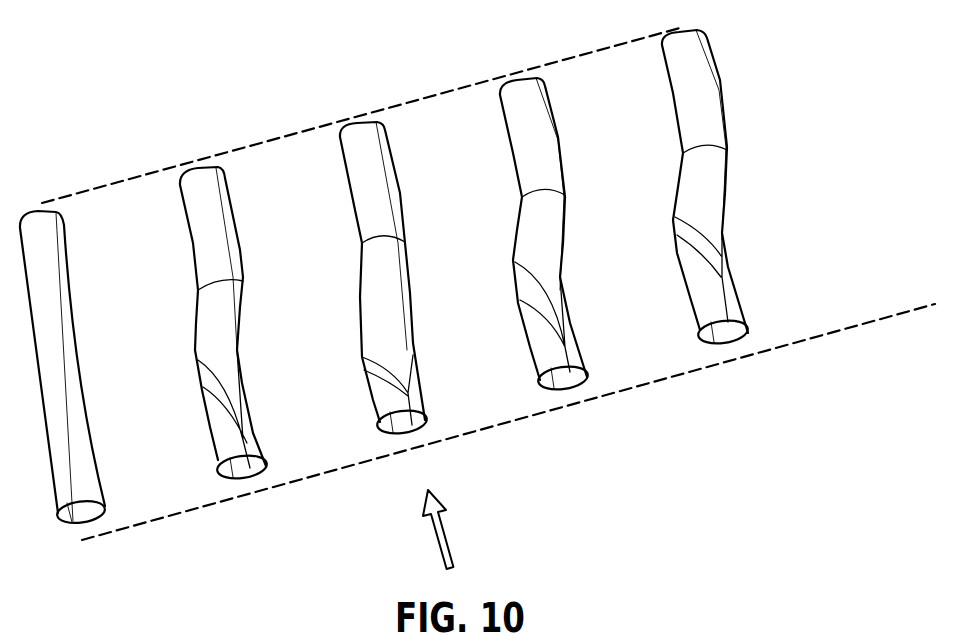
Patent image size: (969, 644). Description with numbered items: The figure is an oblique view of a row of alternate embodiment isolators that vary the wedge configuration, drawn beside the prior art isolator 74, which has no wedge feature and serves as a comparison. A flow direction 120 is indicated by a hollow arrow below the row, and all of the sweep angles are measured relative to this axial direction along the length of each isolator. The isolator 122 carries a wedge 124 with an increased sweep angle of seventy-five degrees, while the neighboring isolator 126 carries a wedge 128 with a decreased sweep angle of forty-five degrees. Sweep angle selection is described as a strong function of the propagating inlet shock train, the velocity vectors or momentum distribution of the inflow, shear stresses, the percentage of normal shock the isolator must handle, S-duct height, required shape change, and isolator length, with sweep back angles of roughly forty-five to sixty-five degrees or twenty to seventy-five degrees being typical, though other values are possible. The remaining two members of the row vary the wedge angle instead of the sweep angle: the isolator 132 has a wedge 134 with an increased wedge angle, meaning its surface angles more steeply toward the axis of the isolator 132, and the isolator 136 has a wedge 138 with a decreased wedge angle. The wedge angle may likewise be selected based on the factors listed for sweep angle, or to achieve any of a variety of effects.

The prior art isolator 74 is at (100, 300).
The flow direction 120 is at (447, 538).
The isolator 122 is at (264, 240).
The wedge 124 is at (221, 397).
The isolator 126 is at (423, 194).
The wedge 128 is at (389, 373).
The isolator 132 is at (582, 149).
The wedge 134 is at (528, 288).
The isolator 136 is at (744, 103).
The wedge 138 is at (703, 250).